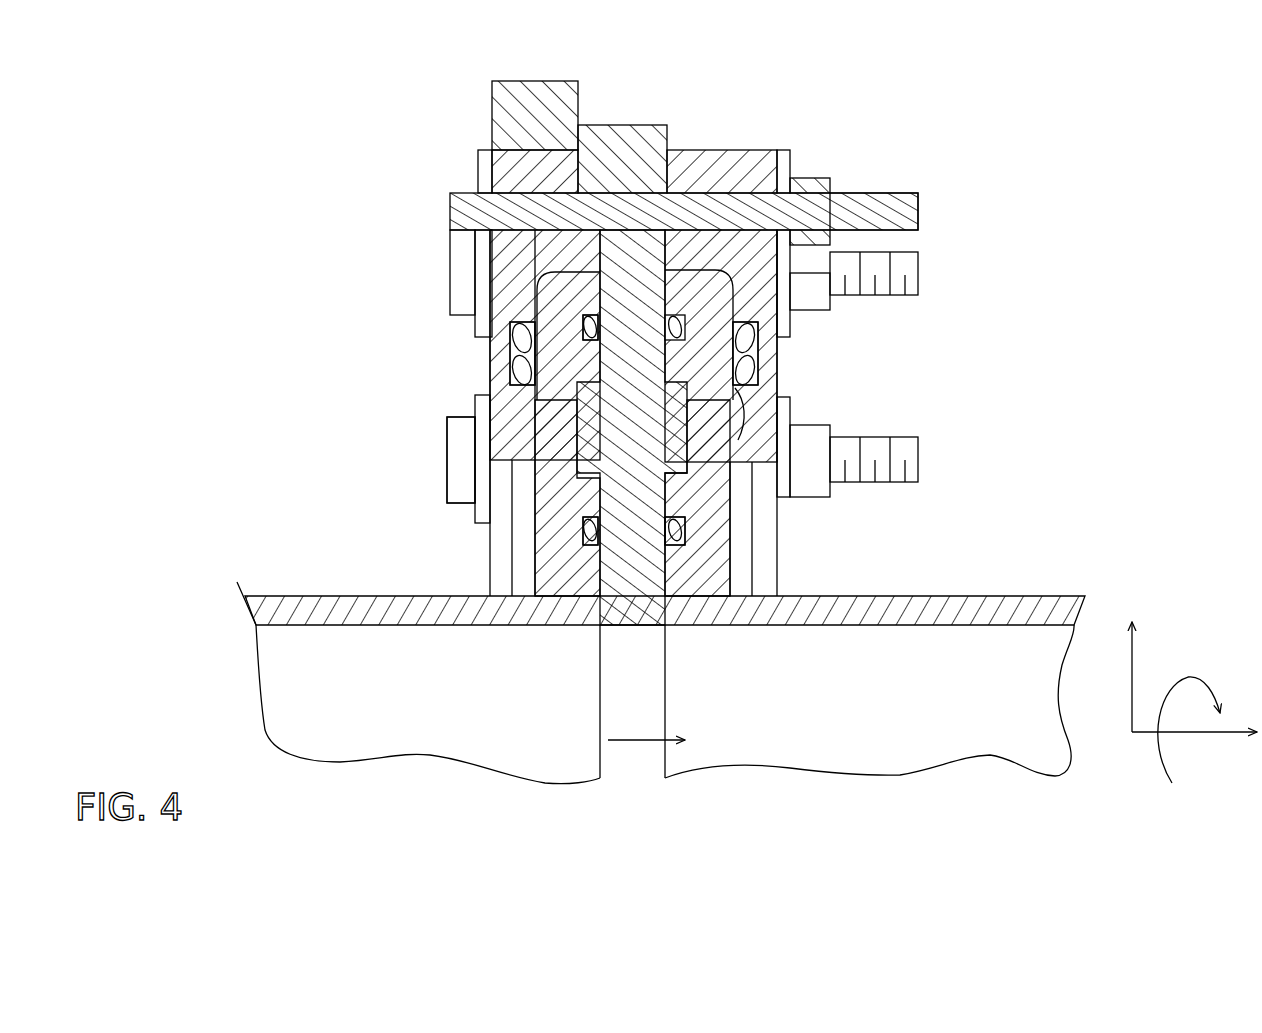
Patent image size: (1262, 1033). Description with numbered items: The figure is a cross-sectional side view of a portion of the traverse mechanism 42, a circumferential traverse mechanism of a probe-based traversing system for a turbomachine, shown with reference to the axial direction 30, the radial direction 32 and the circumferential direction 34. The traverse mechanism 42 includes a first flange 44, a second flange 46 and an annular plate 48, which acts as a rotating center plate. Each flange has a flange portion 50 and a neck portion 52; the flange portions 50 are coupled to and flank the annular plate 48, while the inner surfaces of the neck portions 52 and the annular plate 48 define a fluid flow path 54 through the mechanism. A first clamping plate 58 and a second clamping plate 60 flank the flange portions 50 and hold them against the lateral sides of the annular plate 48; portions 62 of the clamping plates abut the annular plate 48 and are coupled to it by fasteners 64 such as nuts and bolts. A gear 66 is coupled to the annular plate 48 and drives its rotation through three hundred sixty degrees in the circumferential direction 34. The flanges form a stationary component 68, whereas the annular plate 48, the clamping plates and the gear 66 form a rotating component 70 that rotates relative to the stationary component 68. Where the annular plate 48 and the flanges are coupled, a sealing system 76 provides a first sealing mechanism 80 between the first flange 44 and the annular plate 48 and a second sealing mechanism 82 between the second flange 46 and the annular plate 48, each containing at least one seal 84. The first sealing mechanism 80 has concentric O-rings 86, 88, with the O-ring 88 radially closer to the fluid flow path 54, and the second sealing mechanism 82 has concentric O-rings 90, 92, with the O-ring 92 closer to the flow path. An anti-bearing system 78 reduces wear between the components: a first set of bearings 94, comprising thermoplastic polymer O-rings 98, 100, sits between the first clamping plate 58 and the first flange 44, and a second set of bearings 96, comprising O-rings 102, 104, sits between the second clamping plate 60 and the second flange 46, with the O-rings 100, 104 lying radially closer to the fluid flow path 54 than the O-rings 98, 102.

The axial direction 30 is at (1190, 735).
The radial direction 32 is at (1133, 684).
The circumferential direction 34 is at (1154, 753).
The traverse mechanism 42 is at (323, 385).
The first flange 44 is at (310, 506).
The second flange 46 is at (985, 522).
The annular plate 48 is at (650, 458).
The flange portion 50 is at (312, 596).
The neck portion 52 is at (514, 540).
The fluid flow path 54 is at (622, 740).
The first clamping plate 58 is at (458, 214).
The second clamping plate 60 is at (779, 310).
The portions of the clamping plates 62 is at (508, 135).
The fasteners 64 is at (919, 210).
The gear 66 is at (533, 81).
The stationary component 68 is at (718, 605).
The rotating component 70 is at (405, 130).
The sealing system 76 is at (832, 440).
The anti-bearing system 78 is at (745, 378).
The first sealing mechanism 80 is at (792, 265).
The second sealing mechanism 82 is at (700, 548).
The seal 84 is at (588, 340).
The O-ring 86 is at (585, 318).
The O-ring 88 is at (547, 545).
The O-ring 90 is at (705, 318).
The O-ring 92 is at (690, 540).
The first set of bearings 94 is at (513, 338).
The second set of bearings 96 is at (824, 368).
The O-ring 98 is at (515, 352).
The O-ring 100 is at (474, 442).
The O-ring 102 is at (759, 340).
The O-ring 104 is at (757, 398).